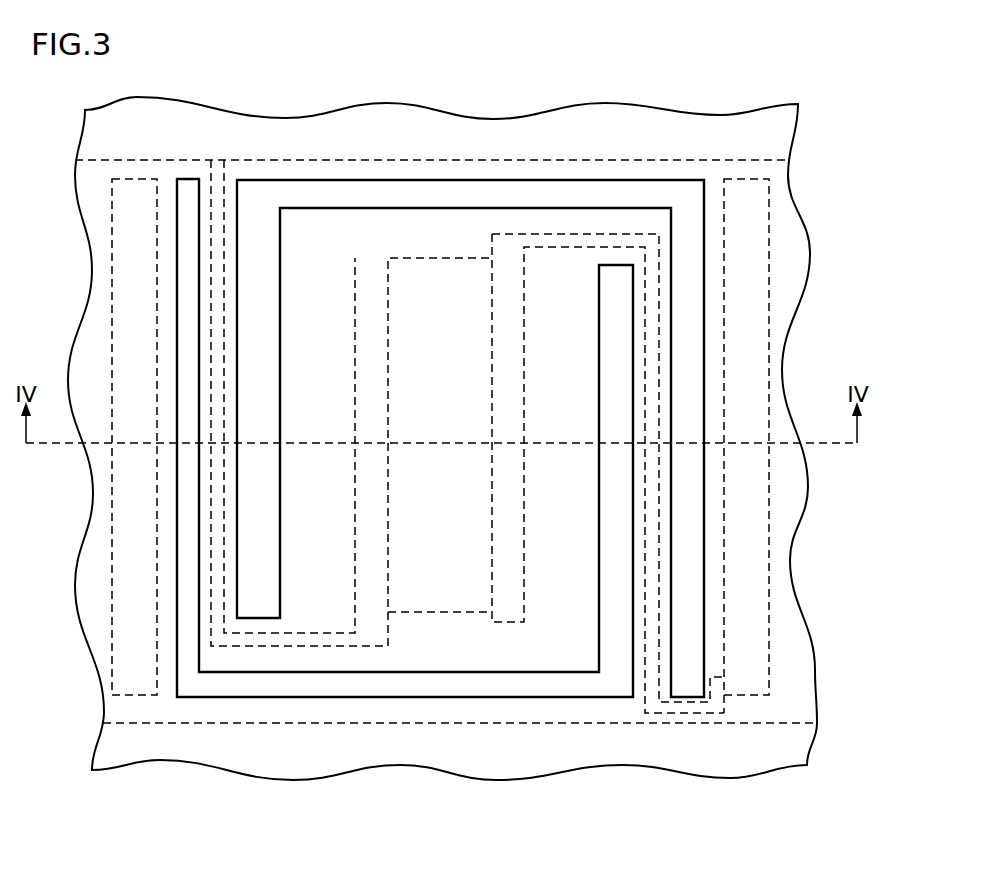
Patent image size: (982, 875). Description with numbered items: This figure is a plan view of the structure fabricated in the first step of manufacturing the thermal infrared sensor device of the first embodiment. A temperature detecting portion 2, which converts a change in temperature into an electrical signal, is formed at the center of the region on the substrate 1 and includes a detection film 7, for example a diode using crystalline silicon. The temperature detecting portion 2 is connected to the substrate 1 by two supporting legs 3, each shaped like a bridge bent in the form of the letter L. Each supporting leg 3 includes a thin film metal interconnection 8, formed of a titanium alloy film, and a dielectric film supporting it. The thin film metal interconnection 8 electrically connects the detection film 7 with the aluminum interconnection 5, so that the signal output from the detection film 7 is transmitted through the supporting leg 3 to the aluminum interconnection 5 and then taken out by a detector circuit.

The substrate 1 is at (533, 682).
The temperature detecting portion 2 is at (317, 300).
The supporting leg 3 is at (667, 508).
The aluminum interconnection 5 is at (752, 623).
The detection film 7 is at (445, 570).
The thin film metal interconnection 8 is at (569, 240).